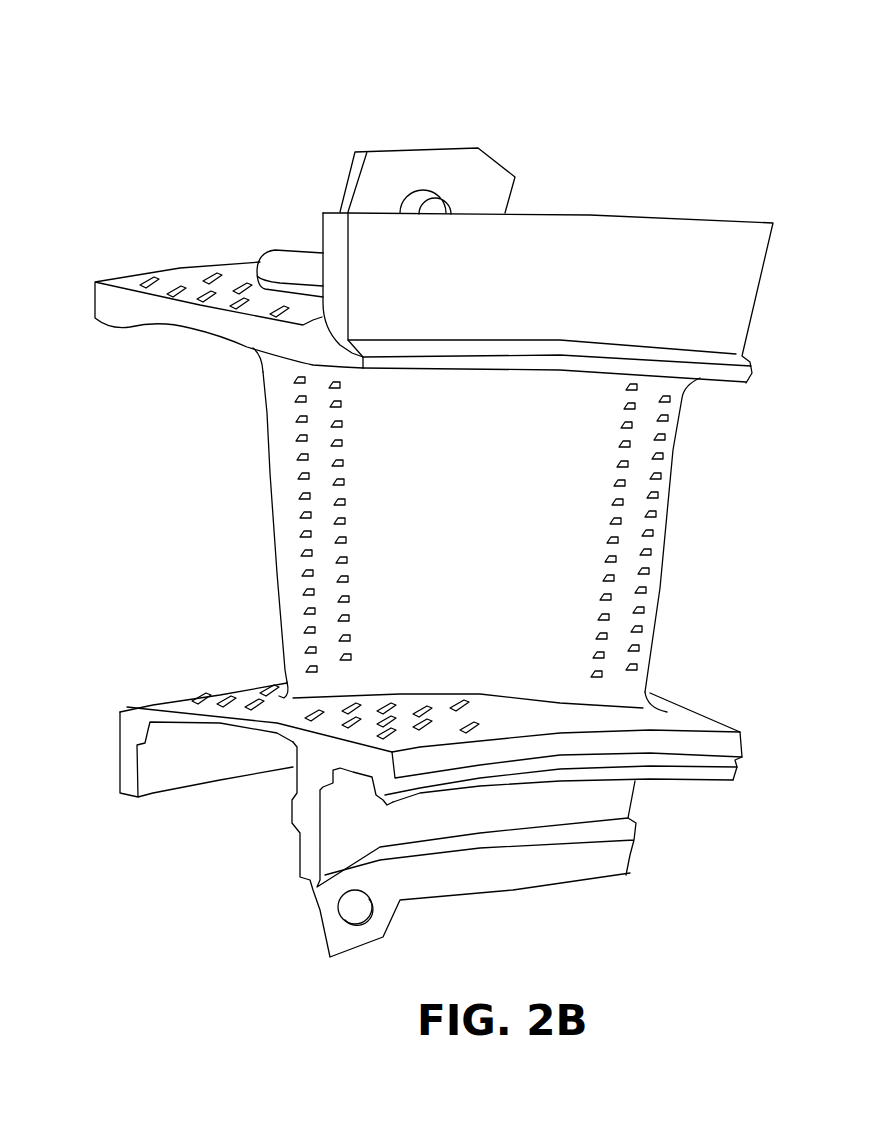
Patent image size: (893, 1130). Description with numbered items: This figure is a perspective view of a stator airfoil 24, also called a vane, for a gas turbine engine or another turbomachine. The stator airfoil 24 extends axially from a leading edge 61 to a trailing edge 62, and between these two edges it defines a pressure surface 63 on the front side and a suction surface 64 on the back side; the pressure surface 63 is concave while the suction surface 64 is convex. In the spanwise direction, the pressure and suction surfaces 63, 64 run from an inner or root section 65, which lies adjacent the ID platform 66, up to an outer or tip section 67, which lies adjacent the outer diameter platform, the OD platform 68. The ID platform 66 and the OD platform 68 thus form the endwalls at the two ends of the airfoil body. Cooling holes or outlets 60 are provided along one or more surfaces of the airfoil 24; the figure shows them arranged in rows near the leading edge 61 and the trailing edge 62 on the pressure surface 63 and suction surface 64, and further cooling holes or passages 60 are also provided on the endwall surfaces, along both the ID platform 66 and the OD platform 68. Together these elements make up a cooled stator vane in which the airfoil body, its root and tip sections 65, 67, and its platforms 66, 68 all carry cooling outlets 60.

The stator airfoil 24 is at (125, 141).
The cooling holes 60 is at (208, 275).
The leading edge 61 is at (267, 415).
The trailing edge 62 is at (660, 588).
The pressure surface 63 is at (398, 532).
The suction surface 64 is at (670, 527).
The inner section 65 is at (298, 678).
The ID platform 66 is at (740, 732).
The outer section 67 is at (277, 375).
The OD platform 68 is at (110, 312).